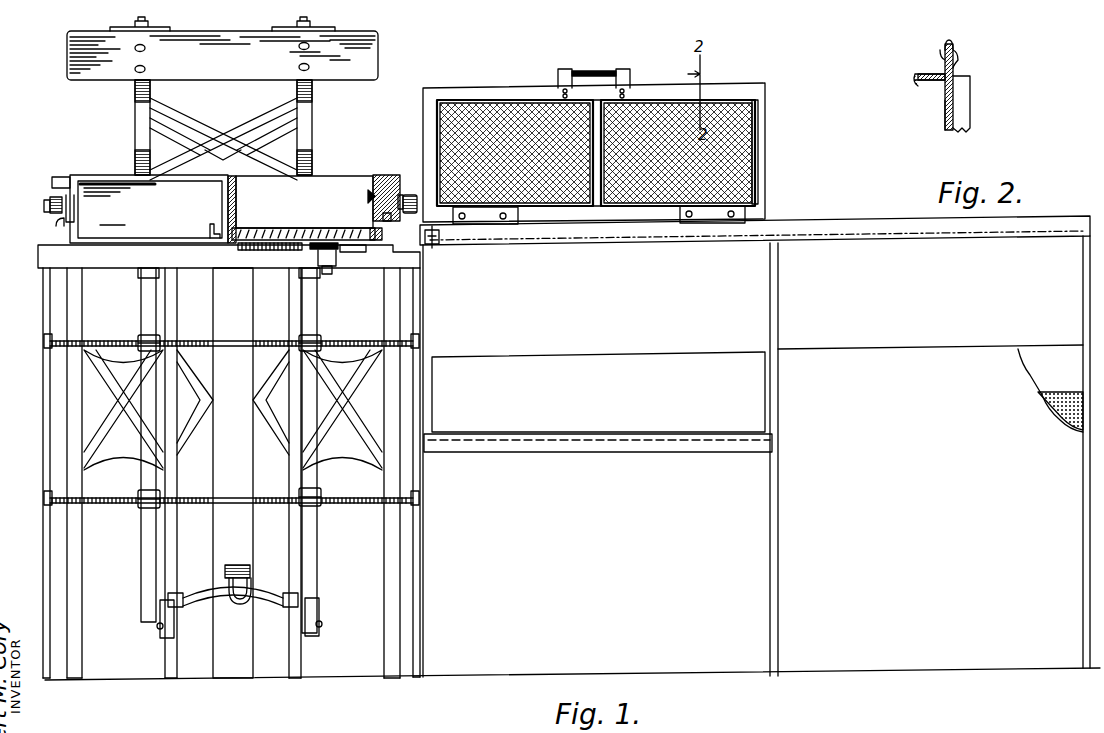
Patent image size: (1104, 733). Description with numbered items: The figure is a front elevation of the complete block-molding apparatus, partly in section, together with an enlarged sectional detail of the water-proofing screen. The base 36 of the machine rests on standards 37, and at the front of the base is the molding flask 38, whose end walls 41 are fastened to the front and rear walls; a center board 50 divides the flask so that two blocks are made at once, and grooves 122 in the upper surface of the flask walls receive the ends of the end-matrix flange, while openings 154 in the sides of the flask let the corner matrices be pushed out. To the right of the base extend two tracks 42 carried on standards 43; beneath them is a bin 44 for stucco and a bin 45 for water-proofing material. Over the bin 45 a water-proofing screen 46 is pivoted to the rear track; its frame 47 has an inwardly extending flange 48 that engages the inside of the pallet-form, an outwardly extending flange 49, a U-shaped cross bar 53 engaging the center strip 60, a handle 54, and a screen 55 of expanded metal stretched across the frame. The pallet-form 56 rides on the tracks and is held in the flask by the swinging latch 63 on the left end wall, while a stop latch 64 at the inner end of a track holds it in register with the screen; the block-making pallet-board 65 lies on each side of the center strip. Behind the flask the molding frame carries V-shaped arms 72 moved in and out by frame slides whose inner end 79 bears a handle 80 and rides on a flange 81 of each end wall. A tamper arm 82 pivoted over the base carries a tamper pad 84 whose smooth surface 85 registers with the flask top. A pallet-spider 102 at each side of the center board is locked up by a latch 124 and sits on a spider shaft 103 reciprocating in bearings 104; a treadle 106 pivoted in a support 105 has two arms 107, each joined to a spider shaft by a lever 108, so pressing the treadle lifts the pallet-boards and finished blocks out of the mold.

In FIG. 1, the base 36 is at (48, 257).
In FIG. 1, the standards 37 is at (75, 400).
In FIG. 1, the molding flask 38 is at (108, 172).
In FIG. 1, the end walls 41 is at (55, 178).
In FIG. 1, the tracks 42 is at (905, 232).
In FIG. 1, the standards 43 is at (780, 315).
In FIG. 1, the bin 44 is at (936, 353).
In FIG. 1, the bin 45 is at (633, 357).
In FIG. 1, the water-proofing screen 46 is at (741, 88).
In FIG. 2, the water-proofing screen 46 is at (943, 113).
In FIG. 1, the frame 47 is at (760, 108).
In FIG. 2, the frame 47 is at (954, 54).
In FIG. 1, the inwardly extending flange 48 is at (762, 157).
In FIG. 2, the inwardly extending flange 48 is at (962, 88).
In FIG. 2, the outwardly extending flange 49 is at (928, 82).
In FIG. 1, the center board 50 is at (237, 197).
In FIG. 1, the U-shaped cross bar 53 is at (588, 122).
In FIG. 1, the handle 54 is at (598, 70).
In FIG. 1, the screen 55 is at (500, 100).
In FIG. 2, the screen 55 is at (945, 130).
In FIG. 1, the pallet-form 56 is at (300, 232).
In FIG. 1, the center strip 60 is at (246, 233).
In FIG. 1, the swinging latch 63 is at (58, 223).
In FIG. 1, the stop latch 64 is at (434, 246).
In FIG. 1, the block-making pallet-board 65 is at (372, 228).
In FIG. 1, the V-shaped arms 72 is at (238, 212).
In FIG. 1, the inner end 79 is at (44, 207).
In FIG. 1, the handle 80 is at (50, 203).
In FIG. 1, the flange 81 is at (74, 220).
In FIG. 1, the tamper arm 82 is at (313, 118).
In FIG. 1, the tamper pad 84 is at (233, 28).
In FIG. 1, the smooth surface 85 is at (368, 54).
In FIG. 1, the pallet-spider 102 is at (348, 252).
In FIG. 1, the spider shaft 103 is at (150, 297).
In FIG. 1, the bearings 104 is at (148, 349).
In FIG. 1, the support 105 is at (233, 474).
In FIG. 1, the treadle 106 is at (234, 565).
In FIG. 1, the arms 107 is at (185, 597).
In FIG. 1, the lever 108 is at (165, 636).
In FIG. 1, the grooves 122 is at (218, 172).
In FIG. 1, the latch 124 is at (323, 262).
In FIG. 1, the openings 154 is at (212, 228).